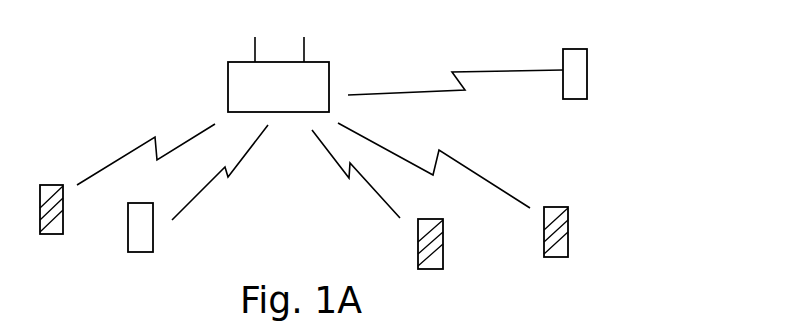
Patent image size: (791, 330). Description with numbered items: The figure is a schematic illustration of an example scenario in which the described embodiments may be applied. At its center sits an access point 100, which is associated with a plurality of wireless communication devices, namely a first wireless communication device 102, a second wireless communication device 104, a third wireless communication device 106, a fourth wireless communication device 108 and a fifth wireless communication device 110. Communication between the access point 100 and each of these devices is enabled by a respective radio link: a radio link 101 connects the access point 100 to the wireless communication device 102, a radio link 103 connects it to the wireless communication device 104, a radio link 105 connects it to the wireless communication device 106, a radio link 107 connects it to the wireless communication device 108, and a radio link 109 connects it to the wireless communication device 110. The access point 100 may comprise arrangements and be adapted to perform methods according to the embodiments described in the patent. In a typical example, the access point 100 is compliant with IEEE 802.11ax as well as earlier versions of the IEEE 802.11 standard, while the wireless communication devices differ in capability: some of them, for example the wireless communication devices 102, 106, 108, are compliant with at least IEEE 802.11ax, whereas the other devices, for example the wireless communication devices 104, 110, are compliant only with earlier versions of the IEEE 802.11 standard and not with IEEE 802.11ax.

The access point 100 is at (278, 74).
The radio link 101 is at (132, 150).
The wireless communication device 102 is at (63, 223).
The radio link 103 is at (233, 170).
The wireless communication device 104 is at (153, 238).
The radio link 105 is at (373, 192).
The wireless communication device 106 is at (443, 257).
The radio link 107 is at (487, 175).
The wireless communication device 108 is at (568, 243).
The radio link 109 is at (500, 70).
The wireless communication device 110 is at (587, 85).